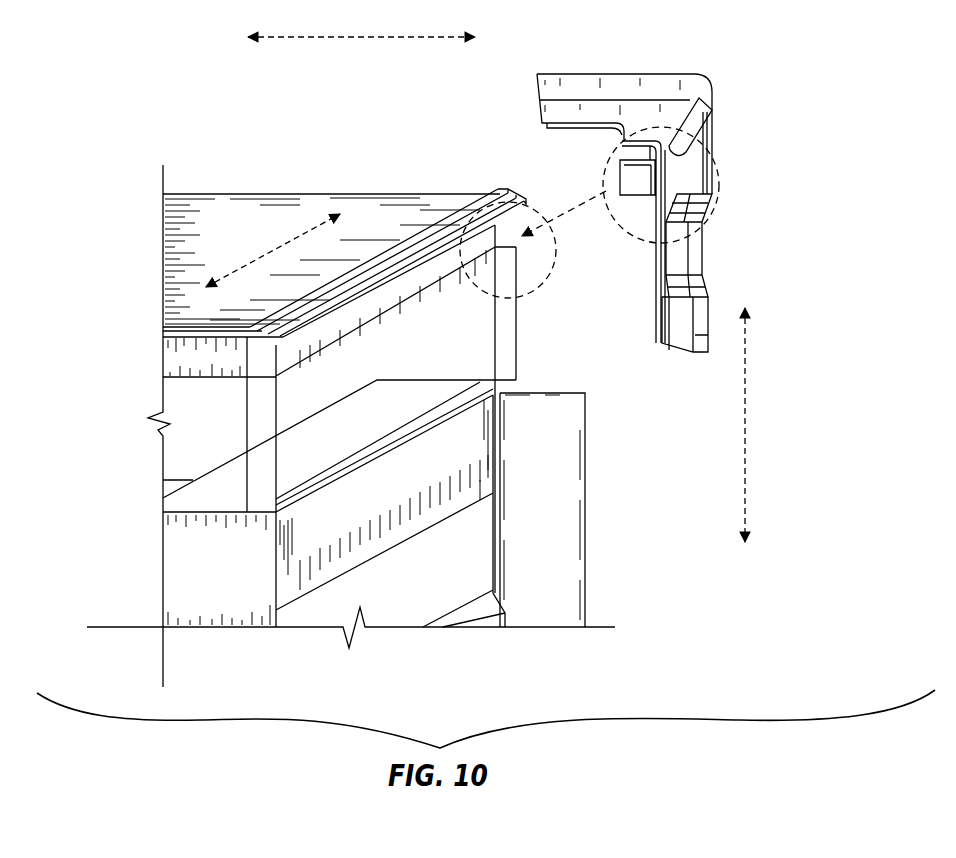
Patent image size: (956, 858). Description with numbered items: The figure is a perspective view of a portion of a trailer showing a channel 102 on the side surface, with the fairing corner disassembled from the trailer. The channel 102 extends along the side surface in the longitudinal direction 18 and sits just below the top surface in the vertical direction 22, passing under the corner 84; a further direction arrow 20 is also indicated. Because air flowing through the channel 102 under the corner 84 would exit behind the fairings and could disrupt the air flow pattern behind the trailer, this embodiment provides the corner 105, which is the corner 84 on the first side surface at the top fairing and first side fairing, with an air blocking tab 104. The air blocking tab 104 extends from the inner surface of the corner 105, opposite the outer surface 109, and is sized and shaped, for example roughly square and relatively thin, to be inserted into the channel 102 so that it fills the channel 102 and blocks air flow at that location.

The longitudinal direction 18 is at (365, 36).
The lateral direction 20 is at (275, 251).
The vertical direction 22 is at (768, 421).
The channel 102 is at (330, 337).
The air blocking tab 104 is at (648, 179).
The corner 105 is at (687, 125).
The corner 84 is at (706, 90).
The outer surface 109 is at (692, 116).